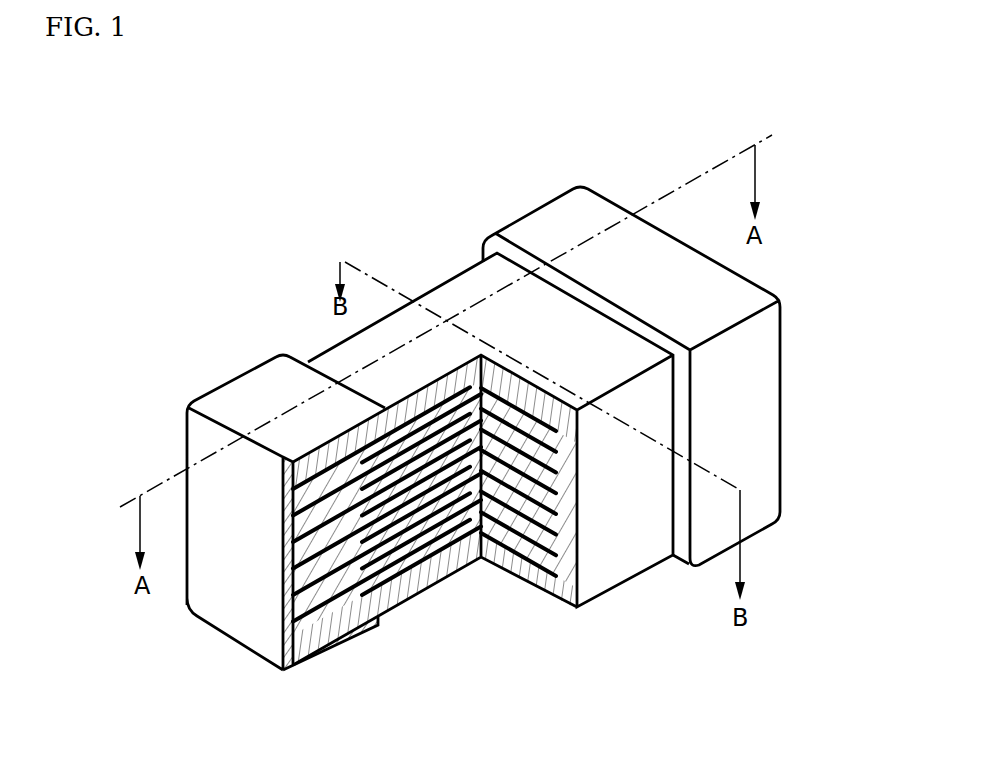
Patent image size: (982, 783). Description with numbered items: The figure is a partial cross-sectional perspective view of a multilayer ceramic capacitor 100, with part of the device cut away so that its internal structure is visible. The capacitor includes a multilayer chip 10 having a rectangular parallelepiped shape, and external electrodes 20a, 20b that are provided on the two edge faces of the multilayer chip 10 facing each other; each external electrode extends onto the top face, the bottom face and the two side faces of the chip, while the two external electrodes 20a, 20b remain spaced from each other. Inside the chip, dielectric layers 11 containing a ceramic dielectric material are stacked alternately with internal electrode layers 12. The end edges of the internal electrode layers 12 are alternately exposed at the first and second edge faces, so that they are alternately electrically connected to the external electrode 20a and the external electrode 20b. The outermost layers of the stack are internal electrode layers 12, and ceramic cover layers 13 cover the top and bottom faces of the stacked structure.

The multilayer ceramic capacitor 100 is at (881, 119).
The multilayer chip 10 is at (318, 343).
The dielectric layer 11 is at (448, 523).
The internal electrode layer 12 is at (412, 547).
The cover layer 13 is at (455, 303).
The external electrode 20a is at (215, 385).
The external electrode 20b is at (540, 228).